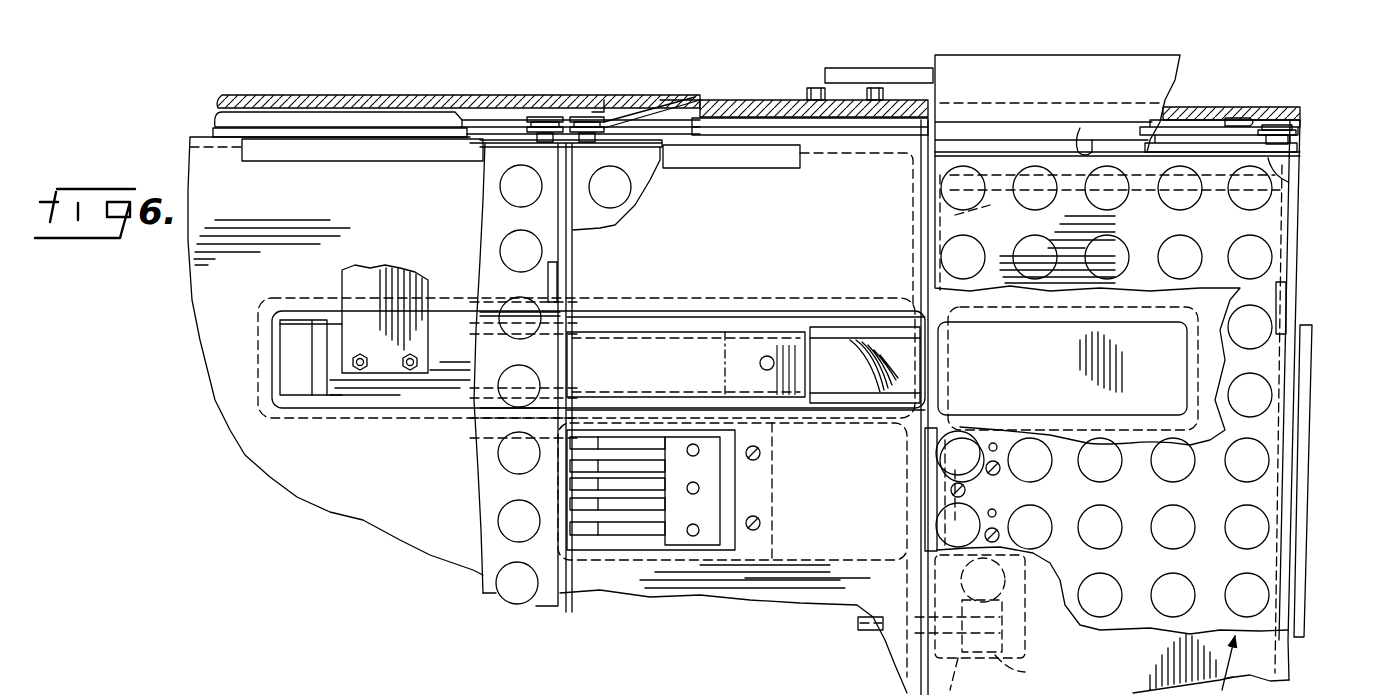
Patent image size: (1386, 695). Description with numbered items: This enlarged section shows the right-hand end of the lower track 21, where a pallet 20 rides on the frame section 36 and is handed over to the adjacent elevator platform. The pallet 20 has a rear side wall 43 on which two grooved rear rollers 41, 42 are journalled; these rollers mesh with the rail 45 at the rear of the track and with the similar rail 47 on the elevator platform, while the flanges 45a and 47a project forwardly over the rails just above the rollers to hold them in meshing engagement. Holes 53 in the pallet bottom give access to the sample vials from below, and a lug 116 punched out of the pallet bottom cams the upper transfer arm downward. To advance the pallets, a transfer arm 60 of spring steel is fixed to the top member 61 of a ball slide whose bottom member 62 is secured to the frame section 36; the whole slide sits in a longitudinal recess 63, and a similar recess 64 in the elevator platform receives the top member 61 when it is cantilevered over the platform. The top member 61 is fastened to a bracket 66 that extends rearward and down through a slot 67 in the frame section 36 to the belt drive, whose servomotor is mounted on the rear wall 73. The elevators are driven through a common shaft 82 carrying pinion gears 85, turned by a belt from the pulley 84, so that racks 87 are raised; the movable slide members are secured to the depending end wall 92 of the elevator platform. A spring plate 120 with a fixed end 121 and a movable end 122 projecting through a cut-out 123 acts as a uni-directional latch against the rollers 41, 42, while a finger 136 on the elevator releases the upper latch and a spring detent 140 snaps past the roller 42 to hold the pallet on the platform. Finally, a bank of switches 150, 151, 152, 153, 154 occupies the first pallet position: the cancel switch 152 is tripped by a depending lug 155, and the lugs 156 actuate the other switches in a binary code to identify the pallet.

The pallet 20 is at (483, 224).
The lower track 21 is at (292, 502).
The frame section 36 is at (375, 527).
The rear roller 41 is at (590, 117).
The rear roller 42 is at (543, 117).
The rear side wall 43 is at (480, 147).
The rail 45 is at (485, 112).
The flange 45a is at (330, 137).
The rail 47 is at (1198, 120).
The flange 47a is at (1082, 128).
The hole 53 is at (500, 592).
The transfer arm 60 is at (692, 352).
The top member of ball slide 61 is at (797, 330).
The bottom member of ball slide 62 is at (876, 330).
The longitudinal recess 63 is at (272, 352).
The recess 64 is at (1068, 368).
The bracket 66 is at (345, 270).
The slot 67 is at (400, 161).
The rear wall 73 is at (392, 95).
The common shaft 82 is at (870, 630).
The pulley 84 is at (967, 676).
The pinion gear 85 is at (1021, 670).
The rack 87 is at (1010, 605).
The depending end wall 92 is at (950, 232).
The lug 116 is at (556, 292).
The spring plate 120 is at (668, 98).
The fixed end 121 is at (780, 100).
The movable end 122 is at (648, 108).
The cut-out 123 is at (608, 98).
The finger 136 is at (845, 68).
The spring detent 140 is at (1228, 118).
The switch 150 is at (620, 535).
The switch 151 is at (586, 510).
The cancel switch 152 is at (575, 487).
The switch 153 is at (575, 465).
The switch 154 is at (575, 440).
The depending lug 155 is at (923, 497).
The switch-actuating lugs 156 is at (1010, 518).